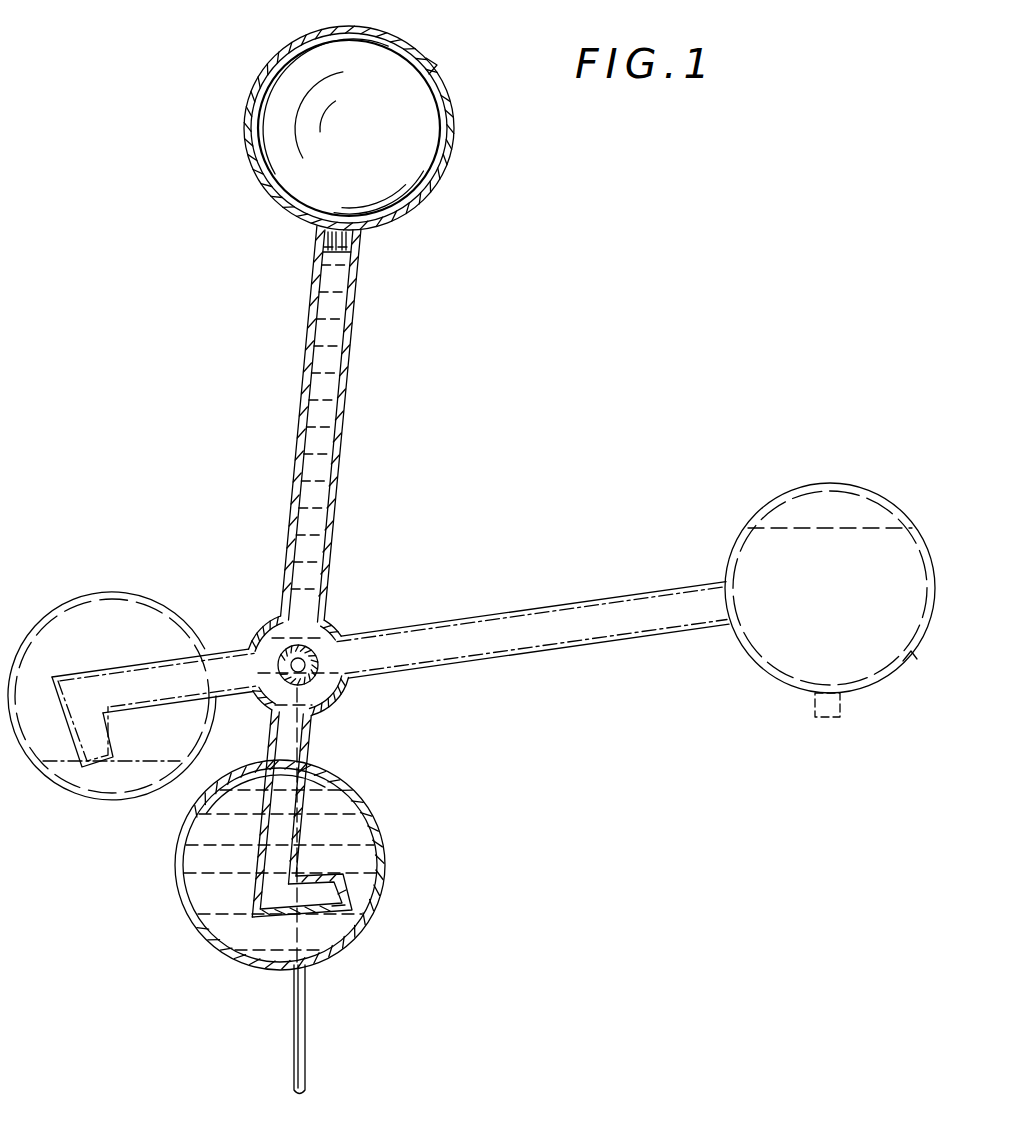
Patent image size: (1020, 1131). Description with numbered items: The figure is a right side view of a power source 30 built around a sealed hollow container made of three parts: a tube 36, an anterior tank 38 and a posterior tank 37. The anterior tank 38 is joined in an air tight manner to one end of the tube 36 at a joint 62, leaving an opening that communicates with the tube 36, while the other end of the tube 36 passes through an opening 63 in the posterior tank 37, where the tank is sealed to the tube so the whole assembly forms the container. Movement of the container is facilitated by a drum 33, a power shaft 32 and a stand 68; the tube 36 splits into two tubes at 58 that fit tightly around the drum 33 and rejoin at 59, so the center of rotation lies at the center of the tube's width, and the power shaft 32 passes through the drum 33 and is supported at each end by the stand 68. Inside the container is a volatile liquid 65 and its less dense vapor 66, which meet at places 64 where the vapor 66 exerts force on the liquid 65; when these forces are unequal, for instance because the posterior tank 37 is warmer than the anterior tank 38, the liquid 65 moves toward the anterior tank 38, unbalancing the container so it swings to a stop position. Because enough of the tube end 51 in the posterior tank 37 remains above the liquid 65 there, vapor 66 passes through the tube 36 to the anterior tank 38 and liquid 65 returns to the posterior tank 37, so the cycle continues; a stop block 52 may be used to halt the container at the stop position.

The power source 30 is at (534, 310).
The power shaft 32 is at (292, 662).
The drum 33 is at (347, 620).
The tube 36 is at (342, 432).
The posterior tank 37 is at (384, 860).
The anterior tank 38 is at (453, 152).
The end of the tube 51 is at (350, 892).
The stop block 52 is at (828, 720).
The split point of the tube 58 is at (332, 628).
The rejoin point of the tube 59 is at (320, 716).
The joint of anterior tank and tube 62 is at (306, 228).
The opening in the posterior tank 63 is at (320, 745).
The meeting place of liquid and vapor 64 is at (352, 247).
The volatile liquid 65 is at (325, 376).
The vapor 66 is at (378, 186).
The stand 68 is at (306, 1018).